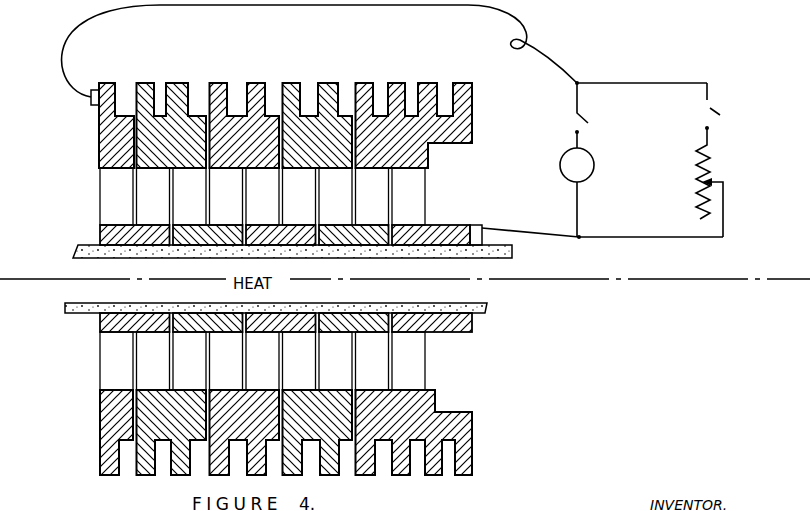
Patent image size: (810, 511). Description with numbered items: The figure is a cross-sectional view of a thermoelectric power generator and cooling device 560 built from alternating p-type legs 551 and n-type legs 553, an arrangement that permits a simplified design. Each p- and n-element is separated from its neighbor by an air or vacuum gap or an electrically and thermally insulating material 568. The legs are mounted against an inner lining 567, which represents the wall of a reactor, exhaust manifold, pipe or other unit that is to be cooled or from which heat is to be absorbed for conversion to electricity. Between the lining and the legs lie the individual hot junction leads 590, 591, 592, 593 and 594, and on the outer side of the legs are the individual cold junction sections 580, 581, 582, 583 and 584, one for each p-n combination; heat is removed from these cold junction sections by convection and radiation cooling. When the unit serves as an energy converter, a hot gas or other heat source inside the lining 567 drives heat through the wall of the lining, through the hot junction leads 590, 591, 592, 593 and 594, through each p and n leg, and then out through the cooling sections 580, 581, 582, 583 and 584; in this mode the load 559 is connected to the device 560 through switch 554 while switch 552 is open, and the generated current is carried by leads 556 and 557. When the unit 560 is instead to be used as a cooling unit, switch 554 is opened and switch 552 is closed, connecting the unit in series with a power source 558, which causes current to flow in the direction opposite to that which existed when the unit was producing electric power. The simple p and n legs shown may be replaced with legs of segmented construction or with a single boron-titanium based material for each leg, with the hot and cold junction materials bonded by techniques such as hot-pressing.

The p-type leg 551 is at (403, 193).
The switch 552 is at (641, 107).
The n-type leg 553 is at (376, 212).
The switch 554 is at (726, 106).
The lead wire 556 is at (577, 82).
The lead wire 557 is at (561, 237).
The power source 558 is at (594, 171).
The load 559 is at (721, 182).
The device 560 is at (100, 404).
The inner lining 567 is at (510, 252).
The gap or insulating material 568 is at (170, 200).
The cold junction section 580 is at (101, 82).
The cold junction section 581 is at (176, 82).
The cold junction section 582 is at (220, 82).
The cold junction section 583 is at (290, 82).
The cold junction section 584 is at (397, 82).
The hot junction lead 590 is at (151, 247).
The hot junction lead 591 is at (221, 247).
The hot junction lead 592 is at (294, 247).
The hot junction lead 593 is at (369, 247).
The hot junction lead 594 is at (449, 247).